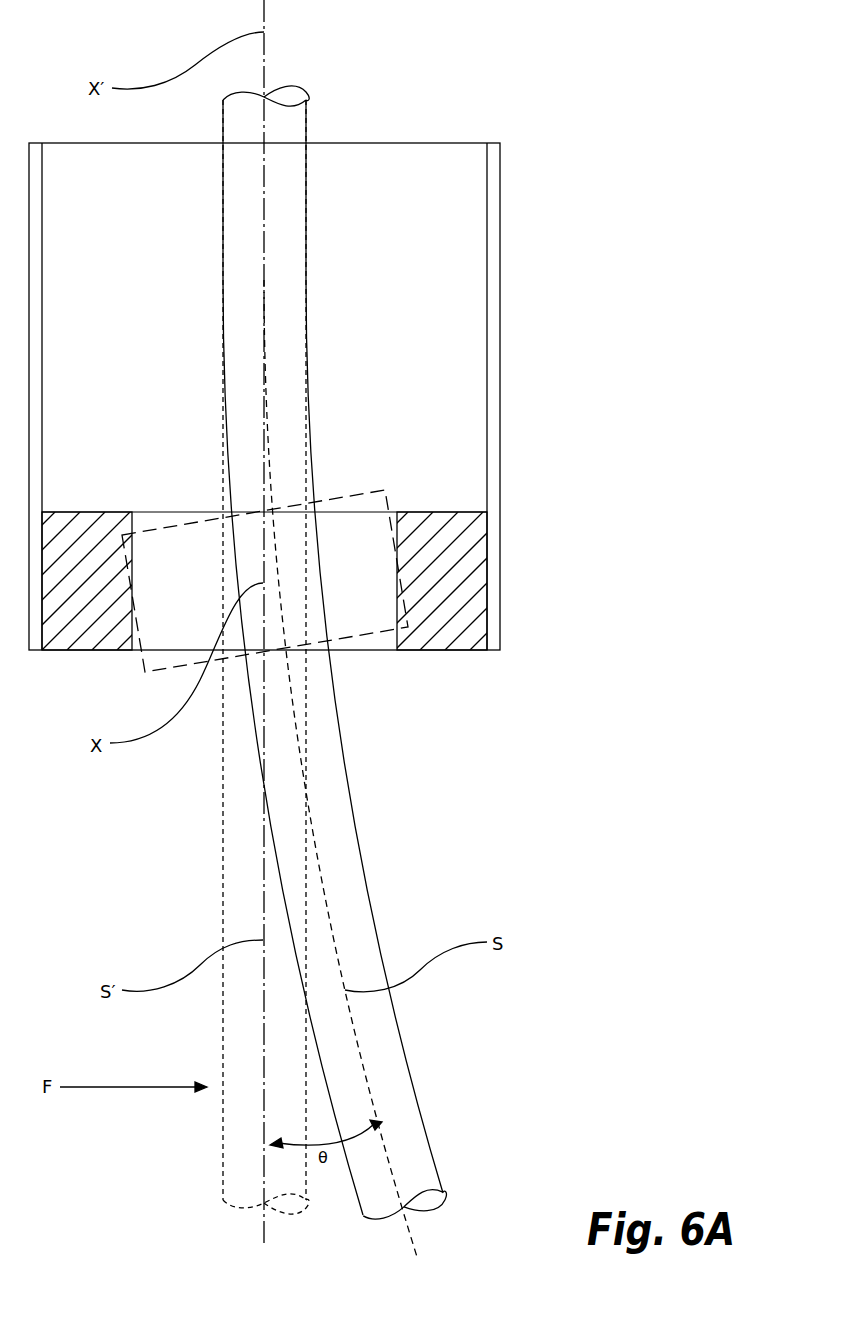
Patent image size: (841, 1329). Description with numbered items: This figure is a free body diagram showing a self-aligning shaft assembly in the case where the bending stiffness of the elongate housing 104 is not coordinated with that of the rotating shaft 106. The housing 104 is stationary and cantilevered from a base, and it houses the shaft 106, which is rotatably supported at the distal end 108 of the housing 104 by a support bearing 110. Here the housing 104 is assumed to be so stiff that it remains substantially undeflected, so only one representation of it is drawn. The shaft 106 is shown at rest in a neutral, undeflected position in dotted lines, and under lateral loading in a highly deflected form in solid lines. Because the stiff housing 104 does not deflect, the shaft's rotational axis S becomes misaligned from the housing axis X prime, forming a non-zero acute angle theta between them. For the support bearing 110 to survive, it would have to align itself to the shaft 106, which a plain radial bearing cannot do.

The elongate housing 104 is at (500, 352).
The rotating shaft 106 is at (288, 273).
The distal end 108 is at (500, 585).
The support bearing 110 is at (367, 503).